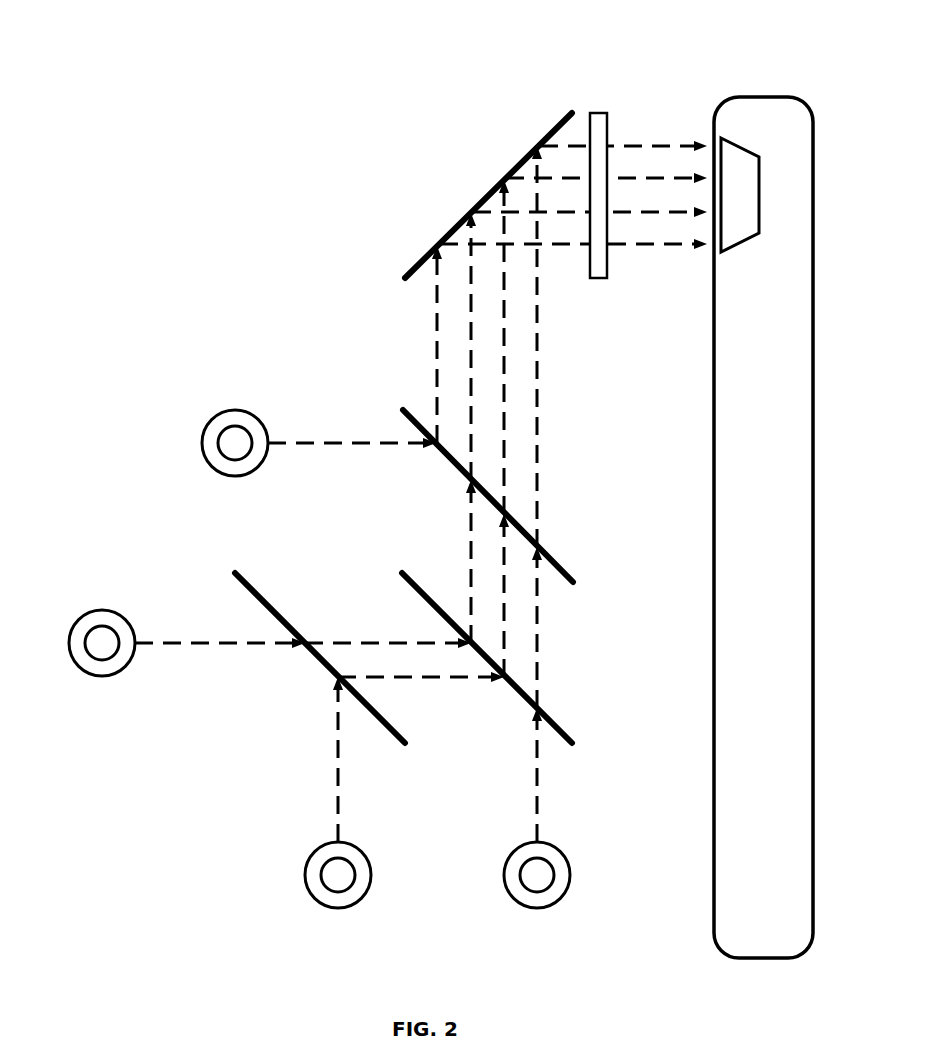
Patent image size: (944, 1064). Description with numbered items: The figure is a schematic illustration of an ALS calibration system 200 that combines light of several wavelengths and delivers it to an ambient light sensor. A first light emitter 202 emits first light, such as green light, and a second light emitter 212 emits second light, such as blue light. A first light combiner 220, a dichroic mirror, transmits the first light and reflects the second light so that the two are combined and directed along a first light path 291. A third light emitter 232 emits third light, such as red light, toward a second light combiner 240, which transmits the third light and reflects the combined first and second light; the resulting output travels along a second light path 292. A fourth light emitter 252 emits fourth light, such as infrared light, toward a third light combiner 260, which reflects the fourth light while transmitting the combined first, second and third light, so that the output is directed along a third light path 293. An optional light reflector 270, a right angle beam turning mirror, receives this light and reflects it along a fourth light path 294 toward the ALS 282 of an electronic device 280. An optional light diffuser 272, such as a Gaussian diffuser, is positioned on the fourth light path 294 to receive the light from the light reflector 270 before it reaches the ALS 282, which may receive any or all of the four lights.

The ALS calibration system 200 is at (262, 176).
The first light emitter 202 is at (79, 620).
The second light emitter 212 is at (306, 874).
The first light combiner 220 is at (408, 743).
The third light emitter 232 is at (505, 874).
The second light combiner 240 is at (575, 743).
The fourth light emitter 252 is at (212, 420).
The third light combiner 260 is at (576, 582).
The light reflector 270 is at (403, 280).
The light diffuser 272 is at (607, 113).
The electronic device 280 is at (762, 97).
The ALS 282 is at (761, 178).
The first light path 291 is at (398, 627).
The second light path 292 is at (455, 535).
The third light path 293 is at (424, 345).
The fourth light path 294 is at (661, 275).